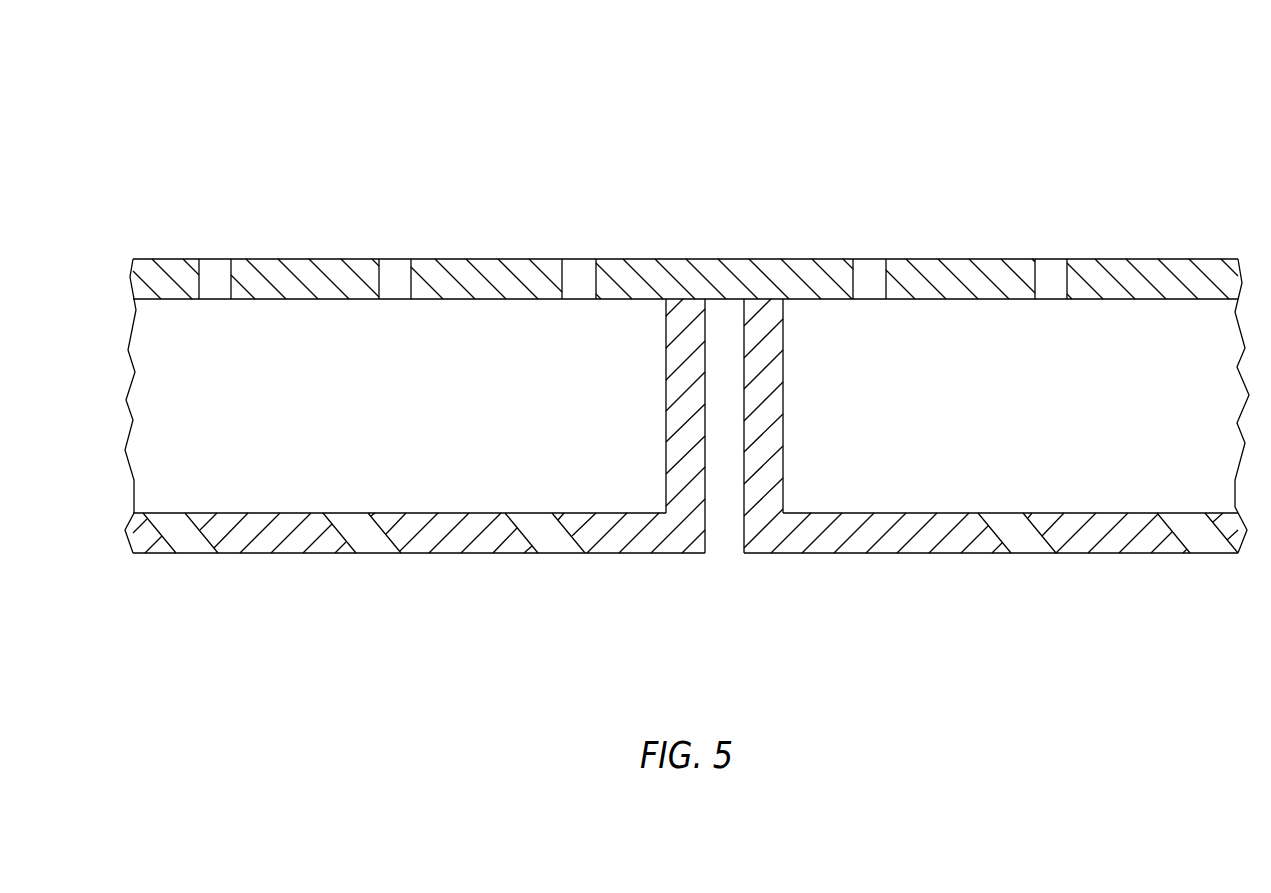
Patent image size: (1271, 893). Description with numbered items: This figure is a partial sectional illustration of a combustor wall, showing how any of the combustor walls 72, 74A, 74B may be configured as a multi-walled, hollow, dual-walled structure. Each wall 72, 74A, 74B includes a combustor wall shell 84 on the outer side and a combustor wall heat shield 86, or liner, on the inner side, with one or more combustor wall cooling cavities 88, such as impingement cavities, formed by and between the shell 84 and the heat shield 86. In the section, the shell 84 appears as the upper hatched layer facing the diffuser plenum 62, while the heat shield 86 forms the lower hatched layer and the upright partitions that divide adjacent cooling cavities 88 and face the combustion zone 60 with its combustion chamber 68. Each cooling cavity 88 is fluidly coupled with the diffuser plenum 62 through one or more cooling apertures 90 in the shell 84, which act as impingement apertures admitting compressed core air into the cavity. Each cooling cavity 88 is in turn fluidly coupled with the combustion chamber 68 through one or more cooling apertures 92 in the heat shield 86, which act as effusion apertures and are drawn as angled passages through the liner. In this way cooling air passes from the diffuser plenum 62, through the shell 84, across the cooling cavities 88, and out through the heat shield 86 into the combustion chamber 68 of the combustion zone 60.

The combustor wall 72 is at (1150, 80).
The combustor wall 74A is at (434, 467).
The combustor wall 74B is at (996, 406).
The diffuser plenum 62 is at (716, 153).
The combustor wall shell 84 is at (476, 259).
The cooling apertures 90 is at (215, 264).
The combustion zone 60 is at (743, 676).
The combustion chamber 68 is at (991, 426).
The combustor wall heat shield 86 is at (640, 556).
The combustor wall cooling cavities 88 is at (393, 424).
The cooling apertures 92 is at (188, 543).